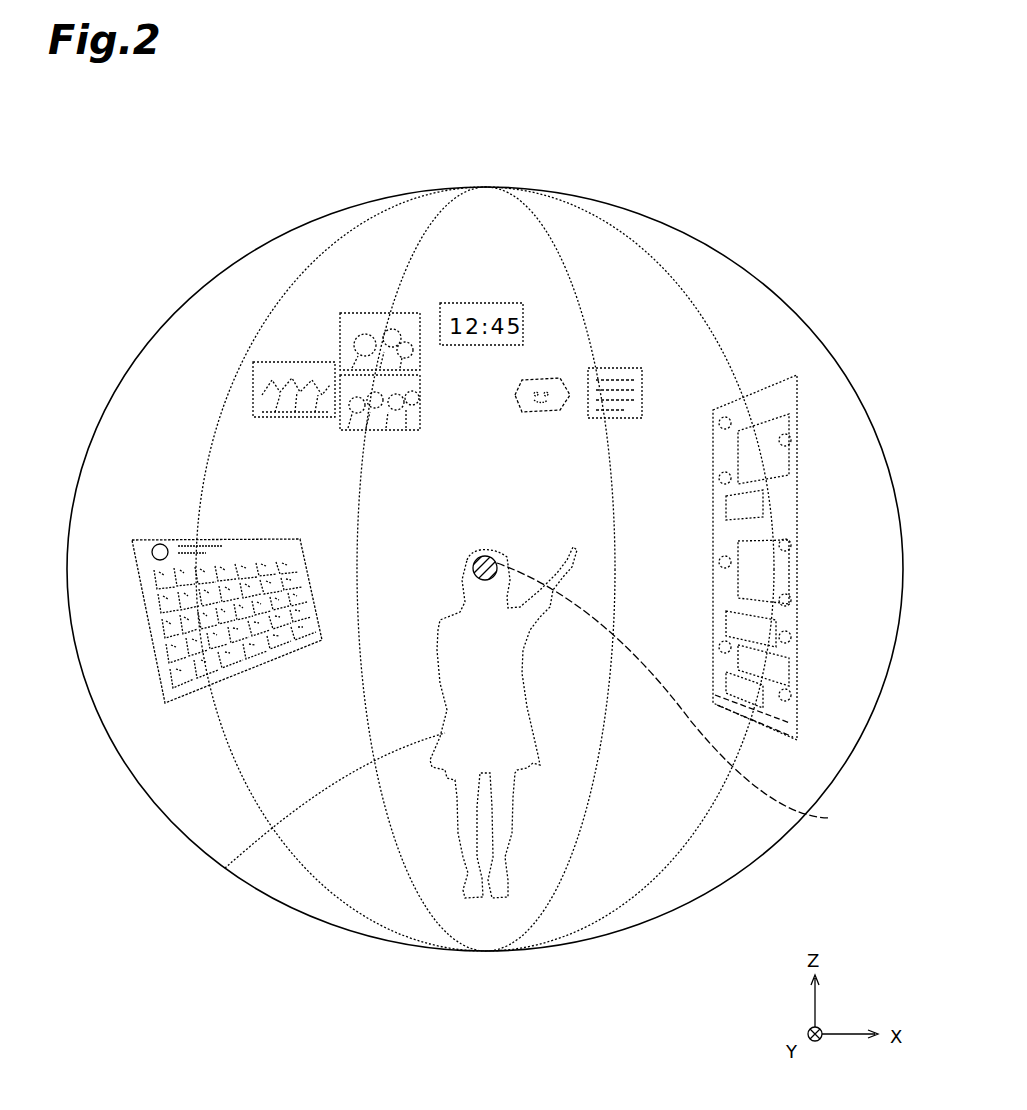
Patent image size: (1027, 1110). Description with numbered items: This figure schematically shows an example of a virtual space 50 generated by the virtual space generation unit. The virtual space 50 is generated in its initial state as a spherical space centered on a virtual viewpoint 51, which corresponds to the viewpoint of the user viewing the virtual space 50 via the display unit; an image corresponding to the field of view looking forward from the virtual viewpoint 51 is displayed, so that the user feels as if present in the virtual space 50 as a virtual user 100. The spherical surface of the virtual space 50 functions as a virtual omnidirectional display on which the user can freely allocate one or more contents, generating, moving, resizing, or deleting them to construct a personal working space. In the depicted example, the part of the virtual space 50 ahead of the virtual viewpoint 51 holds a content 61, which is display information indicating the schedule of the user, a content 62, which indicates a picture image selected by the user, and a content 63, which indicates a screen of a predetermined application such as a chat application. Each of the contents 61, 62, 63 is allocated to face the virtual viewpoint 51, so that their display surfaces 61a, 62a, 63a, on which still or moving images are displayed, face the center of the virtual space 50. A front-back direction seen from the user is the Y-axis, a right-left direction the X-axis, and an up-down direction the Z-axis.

The virtual space 50 is at (600, 207).
The virtual viewpoint 51 is at (681, 698).
The content 61 is at (147, 538).
The display surface 61a is at (162, 625).
The content 62 is at (289, 308).
The display surface 62a is at (354, 314).
The content 63 is at (797, 390).
The display surface 63a is at (791, 440).
The virtual user 100 is at (225, 868).